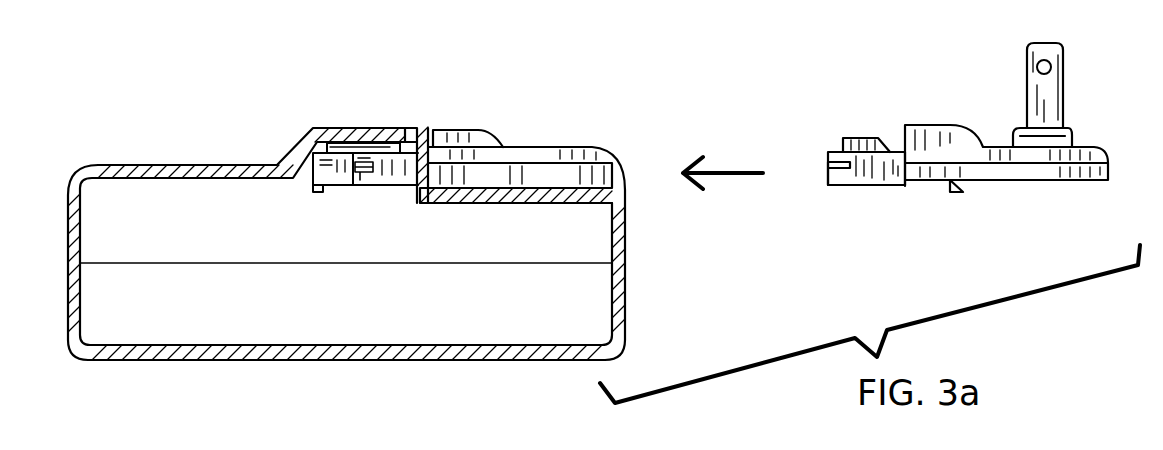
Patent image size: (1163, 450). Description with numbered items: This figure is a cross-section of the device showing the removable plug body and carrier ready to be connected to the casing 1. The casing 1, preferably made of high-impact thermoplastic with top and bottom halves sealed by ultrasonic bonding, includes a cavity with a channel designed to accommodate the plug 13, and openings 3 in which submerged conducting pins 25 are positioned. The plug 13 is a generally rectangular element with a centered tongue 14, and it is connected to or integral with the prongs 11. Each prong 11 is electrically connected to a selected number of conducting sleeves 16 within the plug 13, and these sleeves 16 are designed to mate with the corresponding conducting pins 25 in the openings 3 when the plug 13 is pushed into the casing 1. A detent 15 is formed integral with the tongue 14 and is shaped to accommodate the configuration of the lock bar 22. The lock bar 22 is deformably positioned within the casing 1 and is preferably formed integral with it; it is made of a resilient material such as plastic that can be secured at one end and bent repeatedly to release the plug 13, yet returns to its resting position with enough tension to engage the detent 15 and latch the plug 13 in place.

The casing 1 is at (623, 290).
The openings 3 is at (480, 168).
The prongs 11 is at (1065, 88).
The plug 13 is at (1110, 173).
The tongue 14 is at (875, 186).
The detent 15 is at (858, 137).
The conducting sleeves 16 is at (828, 173).
The lock bar 22 is at (378, 126).
The conducting pins 25 is at (363, 188).